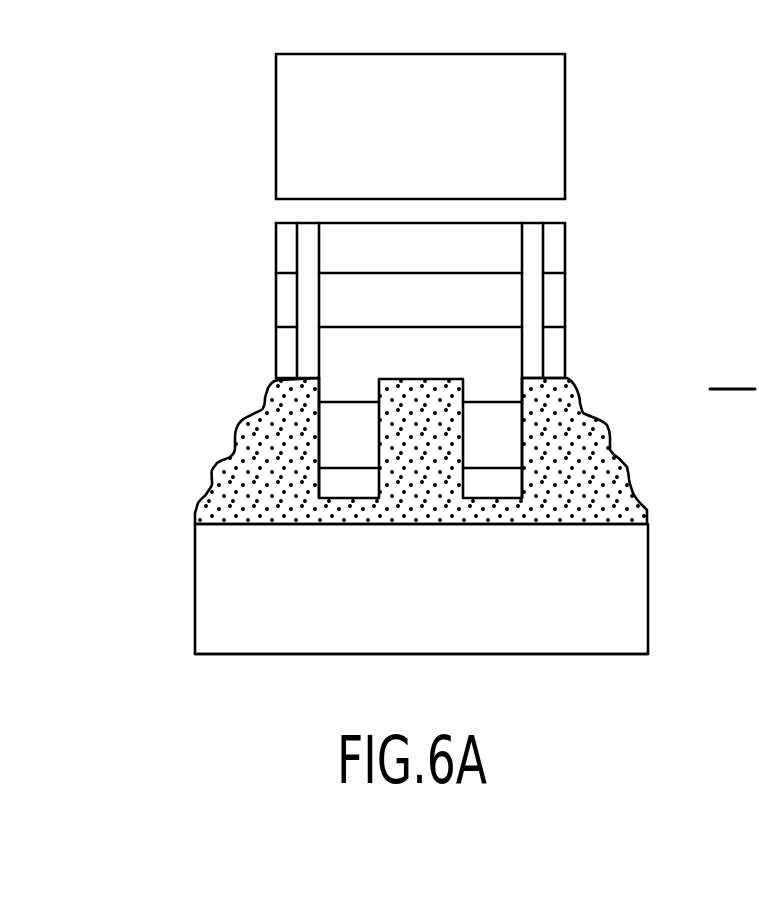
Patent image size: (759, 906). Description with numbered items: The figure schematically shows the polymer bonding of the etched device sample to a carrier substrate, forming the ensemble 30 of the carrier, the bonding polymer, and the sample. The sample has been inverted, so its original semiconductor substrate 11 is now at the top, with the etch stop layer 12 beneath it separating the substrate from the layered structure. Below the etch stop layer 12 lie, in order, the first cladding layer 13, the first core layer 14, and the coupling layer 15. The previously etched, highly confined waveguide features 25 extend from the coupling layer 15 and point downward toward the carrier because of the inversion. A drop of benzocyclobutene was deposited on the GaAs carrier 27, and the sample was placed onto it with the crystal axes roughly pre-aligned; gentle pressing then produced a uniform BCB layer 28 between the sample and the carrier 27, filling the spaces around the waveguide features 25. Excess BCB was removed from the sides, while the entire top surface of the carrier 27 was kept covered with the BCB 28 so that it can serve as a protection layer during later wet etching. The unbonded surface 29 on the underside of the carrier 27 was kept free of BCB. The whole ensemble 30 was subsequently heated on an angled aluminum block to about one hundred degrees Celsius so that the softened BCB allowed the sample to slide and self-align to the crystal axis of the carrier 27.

The semiconductor substrate 11 is at (553, 128).
The etch stop layer 12 is at (558, 212).
The first cladding layer 13 is at (283, 253).
The first core layer 14 is at (283, 302).
The coupling layer 15 is at (283, 353).
The waveguide features 25 is at (351, 500).
The GaAs carrier 27 is at (626, 623).
The BCB layer 28 is at (418, 465).
The unbonded surface 29 is at (572, 655).
The ensemble 30 is at (222, 112).